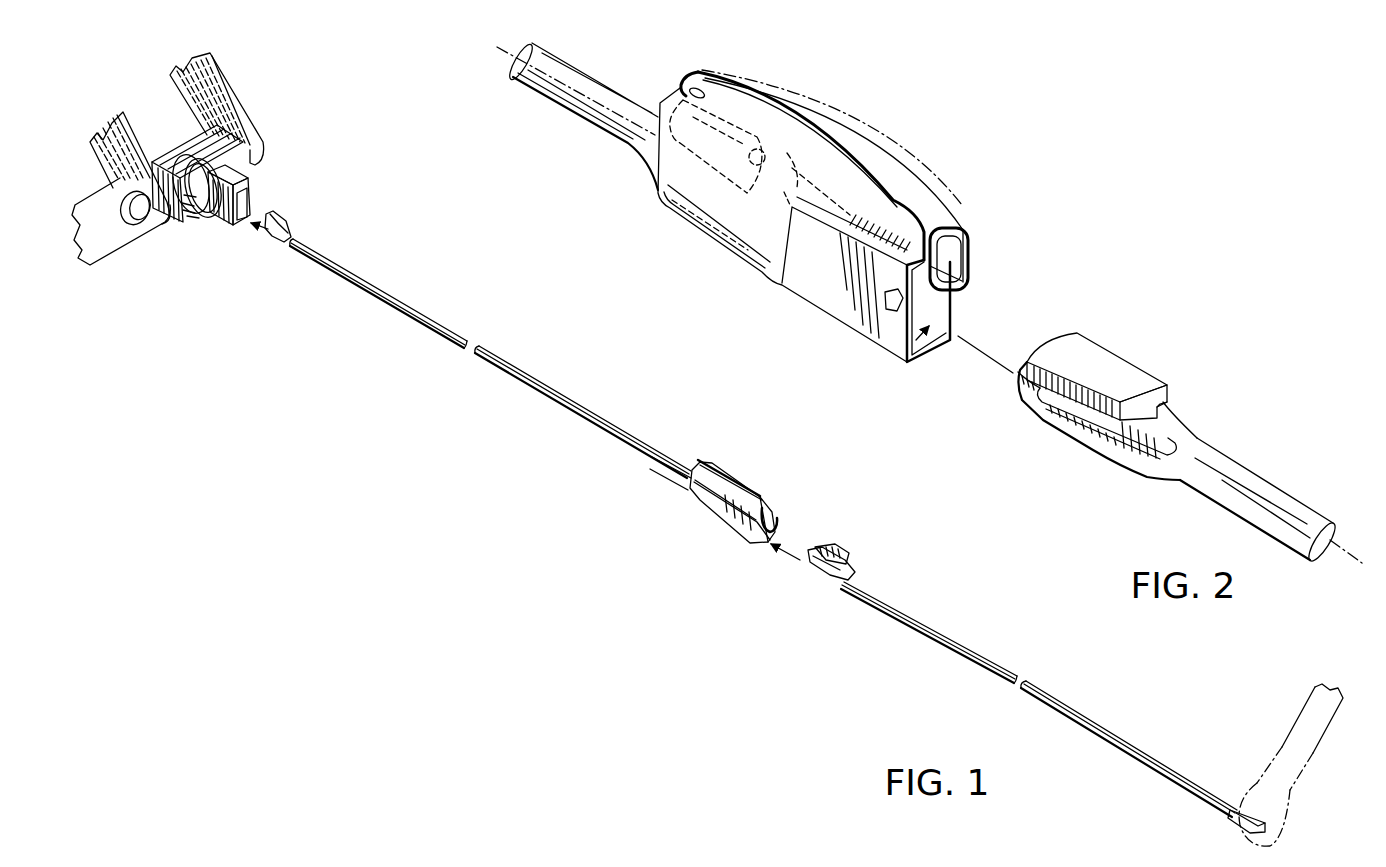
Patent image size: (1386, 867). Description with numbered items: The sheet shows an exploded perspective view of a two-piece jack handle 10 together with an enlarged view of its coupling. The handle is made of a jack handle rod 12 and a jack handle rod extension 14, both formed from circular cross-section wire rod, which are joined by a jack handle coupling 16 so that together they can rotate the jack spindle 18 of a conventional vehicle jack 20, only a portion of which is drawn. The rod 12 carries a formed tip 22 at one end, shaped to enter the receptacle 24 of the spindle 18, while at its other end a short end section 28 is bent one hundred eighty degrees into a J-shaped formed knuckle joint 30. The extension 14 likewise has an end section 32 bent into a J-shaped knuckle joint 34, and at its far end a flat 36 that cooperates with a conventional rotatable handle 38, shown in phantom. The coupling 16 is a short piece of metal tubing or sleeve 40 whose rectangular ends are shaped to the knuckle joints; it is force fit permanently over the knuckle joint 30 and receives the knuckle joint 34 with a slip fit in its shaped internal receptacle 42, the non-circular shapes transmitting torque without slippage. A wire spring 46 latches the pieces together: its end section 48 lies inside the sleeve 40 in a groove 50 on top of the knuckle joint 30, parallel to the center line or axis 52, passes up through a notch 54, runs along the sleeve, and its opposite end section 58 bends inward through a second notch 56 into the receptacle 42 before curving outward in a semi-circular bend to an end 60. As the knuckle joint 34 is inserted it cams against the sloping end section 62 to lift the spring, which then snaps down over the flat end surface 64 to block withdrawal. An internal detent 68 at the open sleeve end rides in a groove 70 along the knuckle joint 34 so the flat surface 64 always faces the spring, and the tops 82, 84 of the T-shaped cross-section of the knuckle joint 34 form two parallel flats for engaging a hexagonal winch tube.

In FIG. 1, the two-piece jack handle 10 is at (601, 549).
In FIG. 1, the jack handle rod 12 is at (552, 378).
In FIG. 2, the jack handle rod 12 is at (546, 113).
In FIG. 1, the jack handle rod extension 14 is at (1001, 648).
In FIG. 2, the jack handle rod extension 14 is at (1299, 485).
In FIG. 1, the jack handle coupling 16 is at (739, 505).
In FIG. 2, the jack handle coupling 16 is at (843, 213).
In FIG. 1, the jack spindle 18 is at (213, 226).
In FIG. 1, the vehicle jack 20 is at (236, 93).
In FIG. 1, the formed tip 22 is at (281, 213).
In FIG. 1, the receptacle 24 is at (252, 197).
In FIG. 1, the short end section 28 is at (660, 478).
In FIG. 2, the short end section 28 is at (623, 153).
In FIG. 2, the formed knuckle joint 30 is at (767, 250).
In FIG. 1, the end section 32 is at (833, 595).
In FIG. 2, the end section 32 is at (1101, 428).
In FIG. 1, the knuckle joint 34 is at (812, 570).
In FIG. 2, the knuckle joint 34 is at (1048, 417).
In FIG. 1, the flat 36 is at (1274, 819).
In FIG. 1, the rotatable handle 38 is at (1296, 715).
In FIG. 1, the tubing or sleeve 40 is at (702, 502).
In FIG. 2, the tubing or sleeve 40 is at (810, 283).
In FIG. 2, the internal receptacle 42 is at (926, 334).
In FIG. 1, the wire spring 46 is at (733, 482).
In FIG. 2, the wire spring 46 is at (892, 152).
In FIG. 2, the end section of wire spring 48 is at (760, 157).
In FIG. 2, the groove 50 is at (764, 169).
In FIG. 2, the center line or axis 52 is at (592, 102).
In FIG. 2, the notch 54 is at (699, 86).
In FIG. 2, the notch 56 is at (893, 223).
In FIG. 2, the free end section of wire spring 58 is at (950, 272).
In FIG. 1, the end of wire spring 60 is at (778, 521).
In FIG. 2, the end of wire spring 60 is at (969, 240).
In FIG. 2, the sloping end section 62 is at (962, 290).
In FIG. 1, the flat end surface 64 is at (848, 568).
In FIG. 2, the flat end surface 64 is at (1162, 392).
In FIG. 2, the internal detent 68 is at (893, 305).
In FIG. 2, the groove 70 is at (1022, 397).
In FIG. 2, the top of T-shaped cross-section 82 is at (1110, 357).
In FIG. 2, the top of T-shaped cross-section 84 is at (1087, 450).